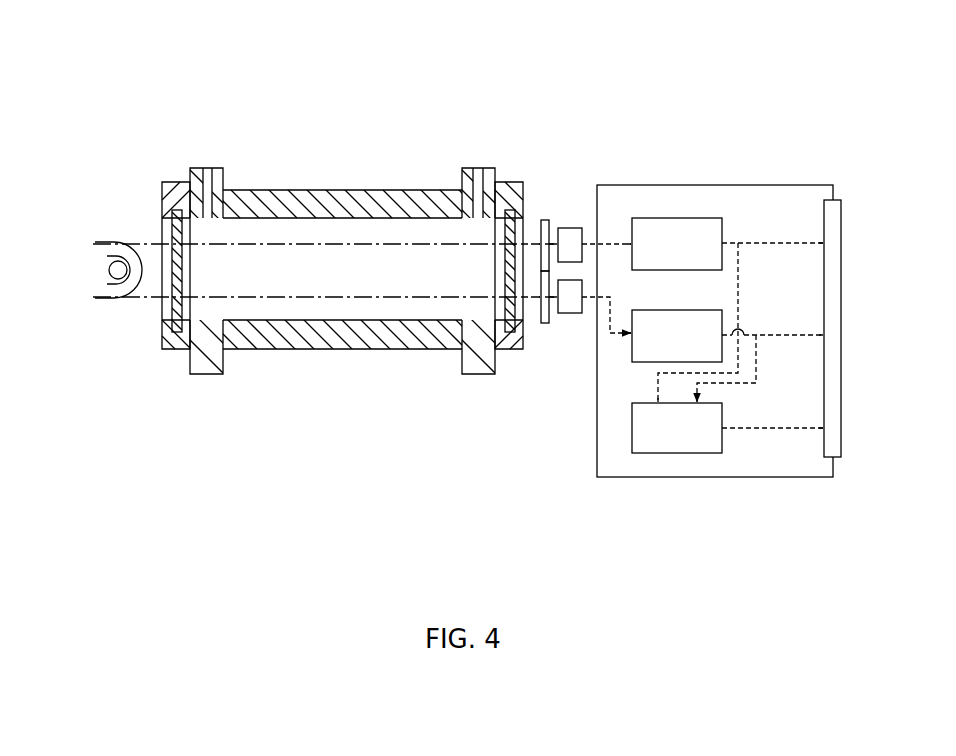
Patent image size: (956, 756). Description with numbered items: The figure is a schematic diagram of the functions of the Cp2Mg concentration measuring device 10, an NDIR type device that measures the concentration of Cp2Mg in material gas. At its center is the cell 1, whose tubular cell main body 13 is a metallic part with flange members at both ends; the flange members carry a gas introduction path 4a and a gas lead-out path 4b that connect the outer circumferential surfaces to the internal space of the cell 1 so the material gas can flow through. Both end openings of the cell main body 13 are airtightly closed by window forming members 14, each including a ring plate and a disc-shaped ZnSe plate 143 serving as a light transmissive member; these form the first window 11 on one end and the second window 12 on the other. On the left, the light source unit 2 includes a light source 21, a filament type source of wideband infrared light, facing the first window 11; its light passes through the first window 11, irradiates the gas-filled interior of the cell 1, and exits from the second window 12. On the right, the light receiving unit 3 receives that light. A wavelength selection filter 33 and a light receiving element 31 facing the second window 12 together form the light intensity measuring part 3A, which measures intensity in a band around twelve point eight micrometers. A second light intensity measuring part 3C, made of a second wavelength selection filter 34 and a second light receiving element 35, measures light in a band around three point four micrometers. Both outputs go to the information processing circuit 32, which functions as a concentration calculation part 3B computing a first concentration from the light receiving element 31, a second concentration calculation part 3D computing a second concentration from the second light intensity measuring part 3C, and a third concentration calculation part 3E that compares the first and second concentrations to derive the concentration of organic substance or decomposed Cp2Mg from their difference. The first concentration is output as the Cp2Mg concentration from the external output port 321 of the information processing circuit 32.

The Cp2Mg concentration measuring device 10 is at (353, 95).
The cell 1 is at (368, 178).
The cell main body 13 is at (333, 350).
The gas introduction path 4a is at (205, 168).
The gas lead-out path 4b is at (478, 168).
The window forming member 14 is at (510, 182).
The ZnSe plate 143 is at (502, 257).
The first window 11 is at (157, 227).
The second window 12 is at (498, 310).
The light source unit 2 is at (92, 307).
The light source 21 is at (112, 303).
The light receiving unit 3 is at (690, 157).
The light intensity measuring part 3A is at (560, 188).
The wavelength selection filter 33 is at (545, 220).
The light receiving element 31 is at (570, 228).
The second light intensity measuring part 3C is at (548, 355).
The second wavelength selection filter 34 is at (545, 323).
The second light receiving element 35 is at (572, 313).
The information processing circuit 32 is at (743, 185).
The concentration calculation part 3B is at (677, 218).
The second concentration calculation part 3D is at (688, 310).
The third concentration calculation part 3E is at (632, 440).
The external output port 321 is at (841, 208).